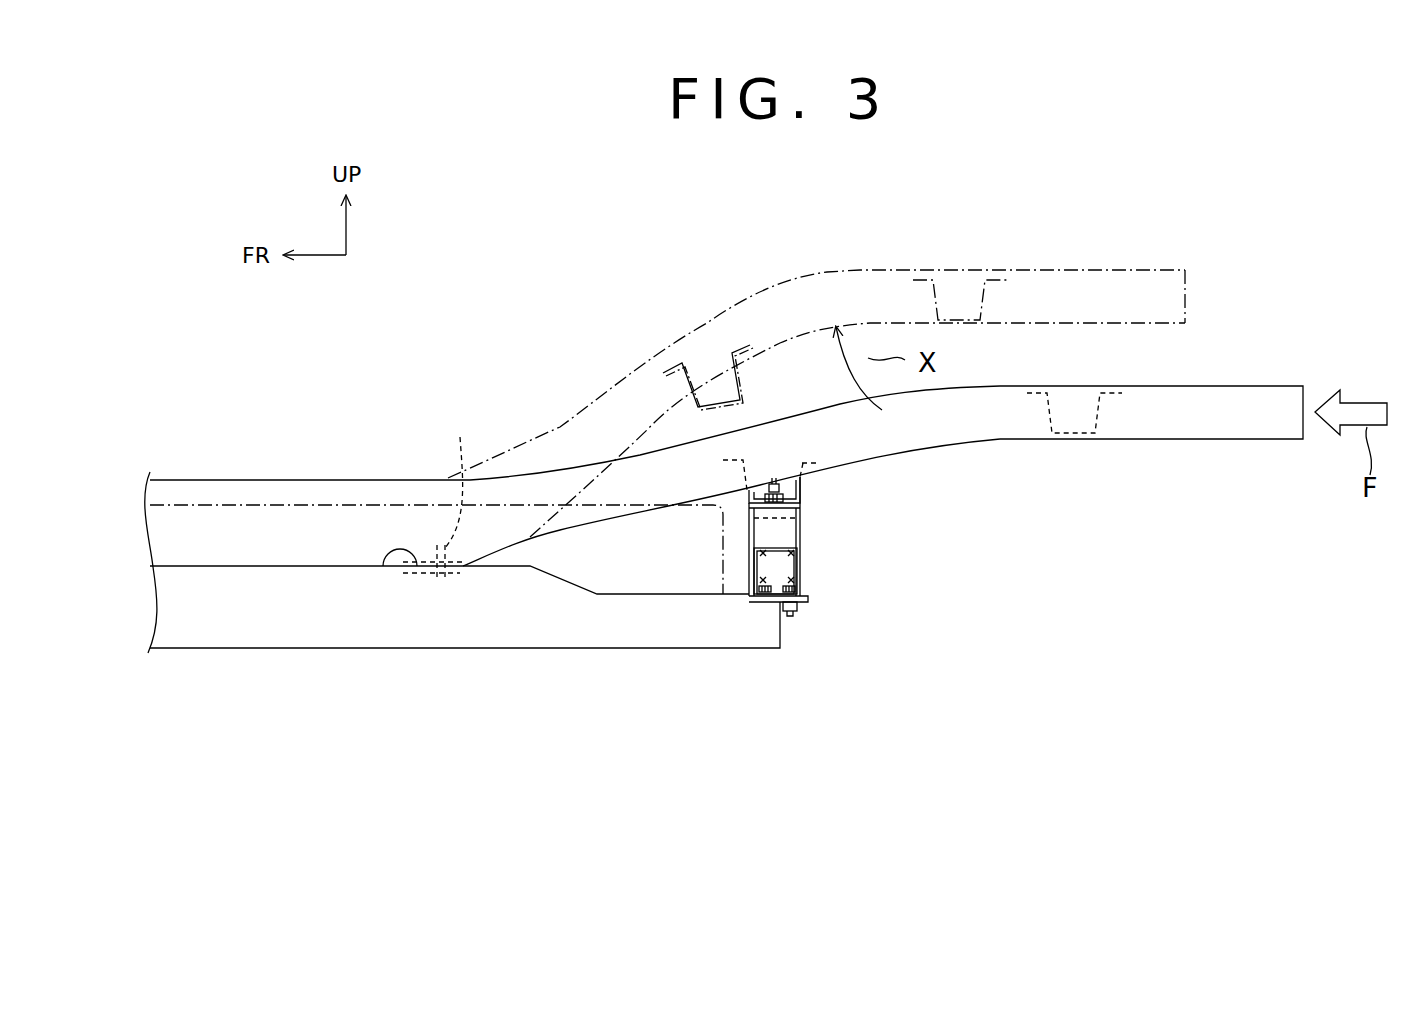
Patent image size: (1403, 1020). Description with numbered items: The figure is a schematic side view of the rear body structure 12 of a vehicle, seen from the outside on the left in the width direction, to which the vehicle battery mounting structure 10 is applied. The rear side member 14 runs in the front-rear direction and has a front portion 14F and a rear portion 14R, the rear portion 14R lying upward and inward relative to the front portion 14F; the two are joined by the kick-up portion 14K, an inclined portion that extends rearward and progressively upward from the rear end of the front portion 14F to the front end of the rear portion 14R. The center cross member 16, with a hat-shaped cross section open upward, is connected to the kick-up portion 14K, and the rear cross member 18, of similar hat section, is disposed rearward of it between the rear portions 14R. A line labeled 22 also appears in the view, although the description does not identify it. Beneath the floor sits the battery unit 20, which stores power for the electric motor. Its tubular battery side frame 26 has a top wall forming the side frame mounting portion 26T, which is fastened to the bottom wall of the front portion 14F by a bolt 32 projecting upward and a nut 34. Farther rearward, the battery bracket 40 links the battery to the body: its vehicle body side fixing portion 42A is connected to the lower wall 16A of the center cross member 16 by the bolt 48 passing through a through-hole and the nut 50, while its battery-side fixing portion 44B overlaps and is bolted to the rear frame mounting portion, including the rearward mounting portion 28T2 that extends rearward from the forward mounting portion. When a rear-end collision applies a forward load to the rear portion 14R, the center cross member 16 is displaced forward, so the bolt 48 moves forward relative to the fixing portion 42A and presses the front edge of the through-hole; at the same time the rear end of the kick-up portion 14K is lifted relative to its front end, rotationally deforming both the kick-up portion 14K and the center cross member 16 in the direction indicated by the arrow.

The vehicle battery mounting structure 10 is at (858, 645).
The rear body structure 12 is at (1274, 285).
The rear side member 14 is at (726, 390).
The front portion 14F is at (308, 480).
The kick-up portion 14K is at (720, 433).
The rear portion 14R is at (1193, 440).
The center cross member 16 is at (806, 481).
The lower wall 16A is at (806, 496).
The rear cross member 18 is at (1103, 413).
The battery unit 20 is at (465, 604).
The floor panel 22 is at (392, 505).
The battery side frame 26 is at (578, 650).
The side frame mounting portion 26T is at (383, 566).
The rearward mounting portion 28T2 is at (805, 605).
The bolt 32 is at (448, 580).
The nut 34 is at (460, 477).
The battery bracket 40 is at (850, 552).
The vehicle body side fixing portion 42A is at (800, 520).
The battery-side fixing portion 44B is at (808, 580).
The bolt 48 is at (778, 505).
The nut 50 is at (762, 484).